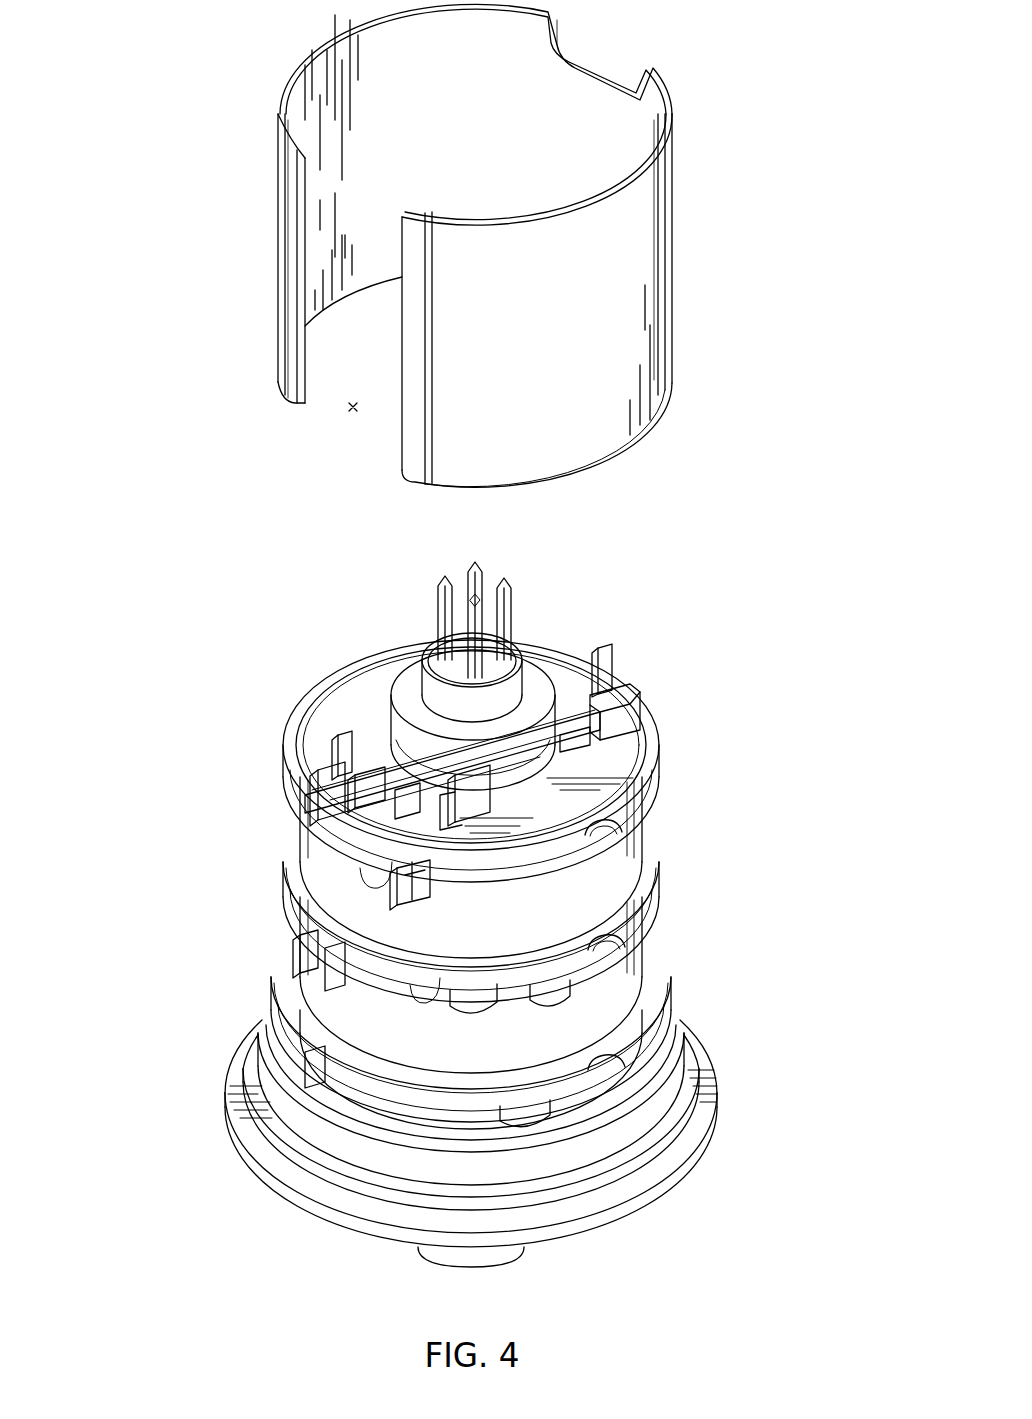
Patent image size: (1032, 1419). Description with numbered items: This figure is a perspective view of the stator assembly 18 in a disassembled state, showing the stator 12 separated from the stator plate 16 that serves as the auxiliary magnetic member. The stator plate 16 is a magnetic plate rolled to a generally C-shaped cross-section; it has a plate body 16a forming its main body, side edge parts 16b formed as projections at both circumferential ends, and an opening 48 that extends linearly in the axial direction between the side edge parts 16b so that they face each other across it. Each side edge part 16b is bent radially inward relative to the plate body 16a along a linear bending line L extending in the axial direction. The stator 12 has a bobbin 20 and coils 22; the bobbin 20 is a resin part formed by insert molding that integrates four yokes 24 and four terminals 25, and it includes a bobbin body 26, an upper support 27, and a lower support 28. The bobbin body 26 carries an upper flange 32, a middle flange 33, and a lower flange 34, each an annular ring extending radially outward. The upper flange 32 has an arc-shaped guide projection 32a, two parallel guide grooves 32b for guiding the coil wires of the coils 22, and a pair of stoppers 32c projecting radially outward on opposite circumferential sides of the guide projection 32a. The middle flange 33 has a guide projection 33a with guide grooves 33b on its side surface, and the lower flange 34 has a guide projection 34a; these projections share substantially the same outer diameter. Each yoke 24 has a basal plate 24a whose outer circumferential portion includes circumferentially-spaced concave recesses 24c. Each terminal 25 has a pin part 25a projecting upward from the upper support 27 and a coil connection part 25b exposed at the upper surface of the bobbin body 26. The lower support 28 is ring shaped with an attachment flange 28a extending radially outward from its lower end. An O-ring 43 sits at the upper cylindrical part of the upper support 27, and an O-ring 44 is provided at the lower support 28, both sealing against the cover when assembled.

The stator 12 is at (698, 808).
The stator plate 16 is at (468, 245).
The plate body 16a is at (647, 302).
The side edge parts 16b is at (292, 272).
The stator assembly 18 is at (712, 78).
The bobbin 20 is at (490, 1161).
The coils 22 is at (328, 888).
The yoke 24 is at (454, 973).
The basal plate 24a is at (547, 877).
The concave recesses 24c is at (478, 883).
The terminal 25 is at (477, 616).
The pin part 25a is at (438, 605).
The coil connection part 25b is at (342, 744).
The bobbin body 26 is at (336, 704).
The upper support 27 is at (622, 703).
The lower support 28 is at (434, 1144).
The attachment flange 28a is at (297, 1170).
The upper flange 32 is at (386, 830).
The guide projection 32a is at (312, 823).
The guide grooves 32b is at (340, 851).
The stoppers 32c is at (287, 782).
The middle flange 33 is at (461, 918).
The guide projection 33a is at (303, 952).
The guide grooves 33b is at (300, 982).
The lower flange 34 is at (454, 1049).
The guide projection 34a is at (320, 1077).
The O-ring 43 is at (407, 688).
The O-ring 44 is at (362, 1152).
The opening 48 is at (350, 408).
The linear bending line L is at (292, 218).